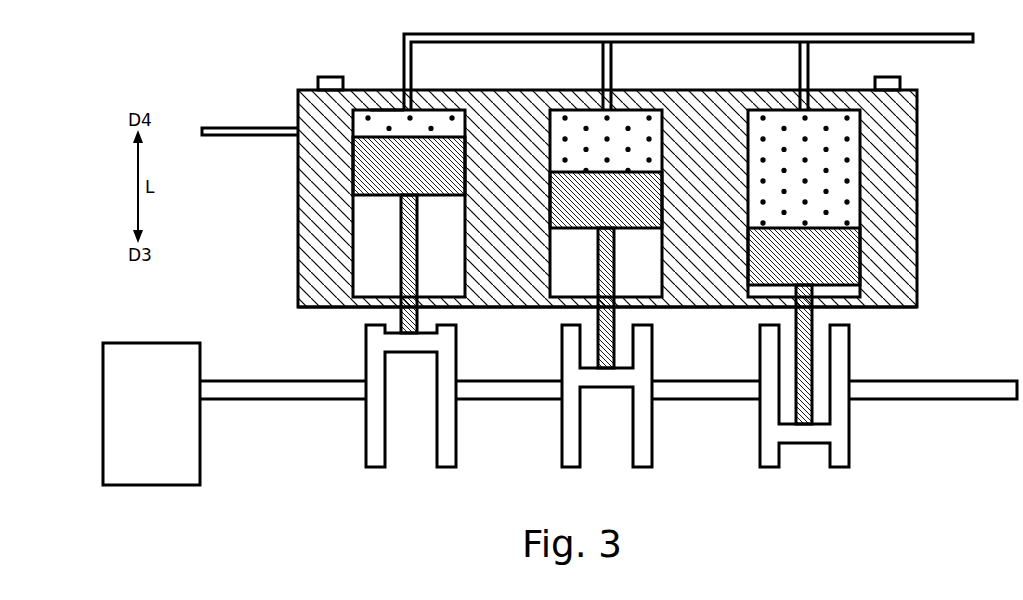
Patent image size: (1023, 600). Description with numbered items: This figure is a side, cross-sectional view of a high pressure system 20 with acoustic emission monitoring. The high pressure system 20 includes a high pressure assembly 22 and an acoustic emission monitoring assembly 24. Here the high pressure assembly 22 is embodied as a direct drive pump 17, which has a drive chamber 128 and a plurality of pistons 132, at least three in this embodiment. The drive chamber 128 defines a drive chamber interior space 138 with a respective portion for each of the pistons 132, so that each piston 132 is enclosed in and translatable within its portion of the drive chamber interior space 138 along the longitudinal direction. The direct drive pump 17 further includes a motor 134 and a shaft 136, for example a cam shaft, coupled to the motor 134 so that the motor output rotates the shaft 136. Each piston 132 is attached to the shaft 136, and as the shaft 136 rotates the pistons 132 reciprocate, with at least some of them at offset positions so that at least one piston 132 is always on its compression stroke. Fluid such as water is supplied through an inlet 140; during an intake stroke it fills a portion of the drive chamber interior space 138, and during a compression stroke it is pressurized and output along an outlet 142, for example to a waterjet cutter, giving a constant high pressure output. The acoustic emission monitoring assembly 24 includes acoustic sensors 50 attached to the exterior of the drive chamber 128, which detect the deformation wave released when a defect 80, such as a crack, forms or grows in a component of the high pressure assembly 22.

The direct drive pump 17 is at (569, 233).
The high pressure system 20 is at (567, 185).
The high pressure assembly 22 is at (371, 233).
The acoustic emission monitoring assembly 24 is at (809, 179).
The acoustic sensor 50 is at (607, 66).
The defect 80 is at (345, 66).
The drive chamber 128 is at (632, 332).
The pistons 132 is at (606, 170).
The motor 134 is at (164, 400).
The shaft 136 is at (608, 331).
The drive chamber interior space 138 is at (613, 160).
The inlet 140 is at (233, 114).
The outlet 142 is at (688, 58).